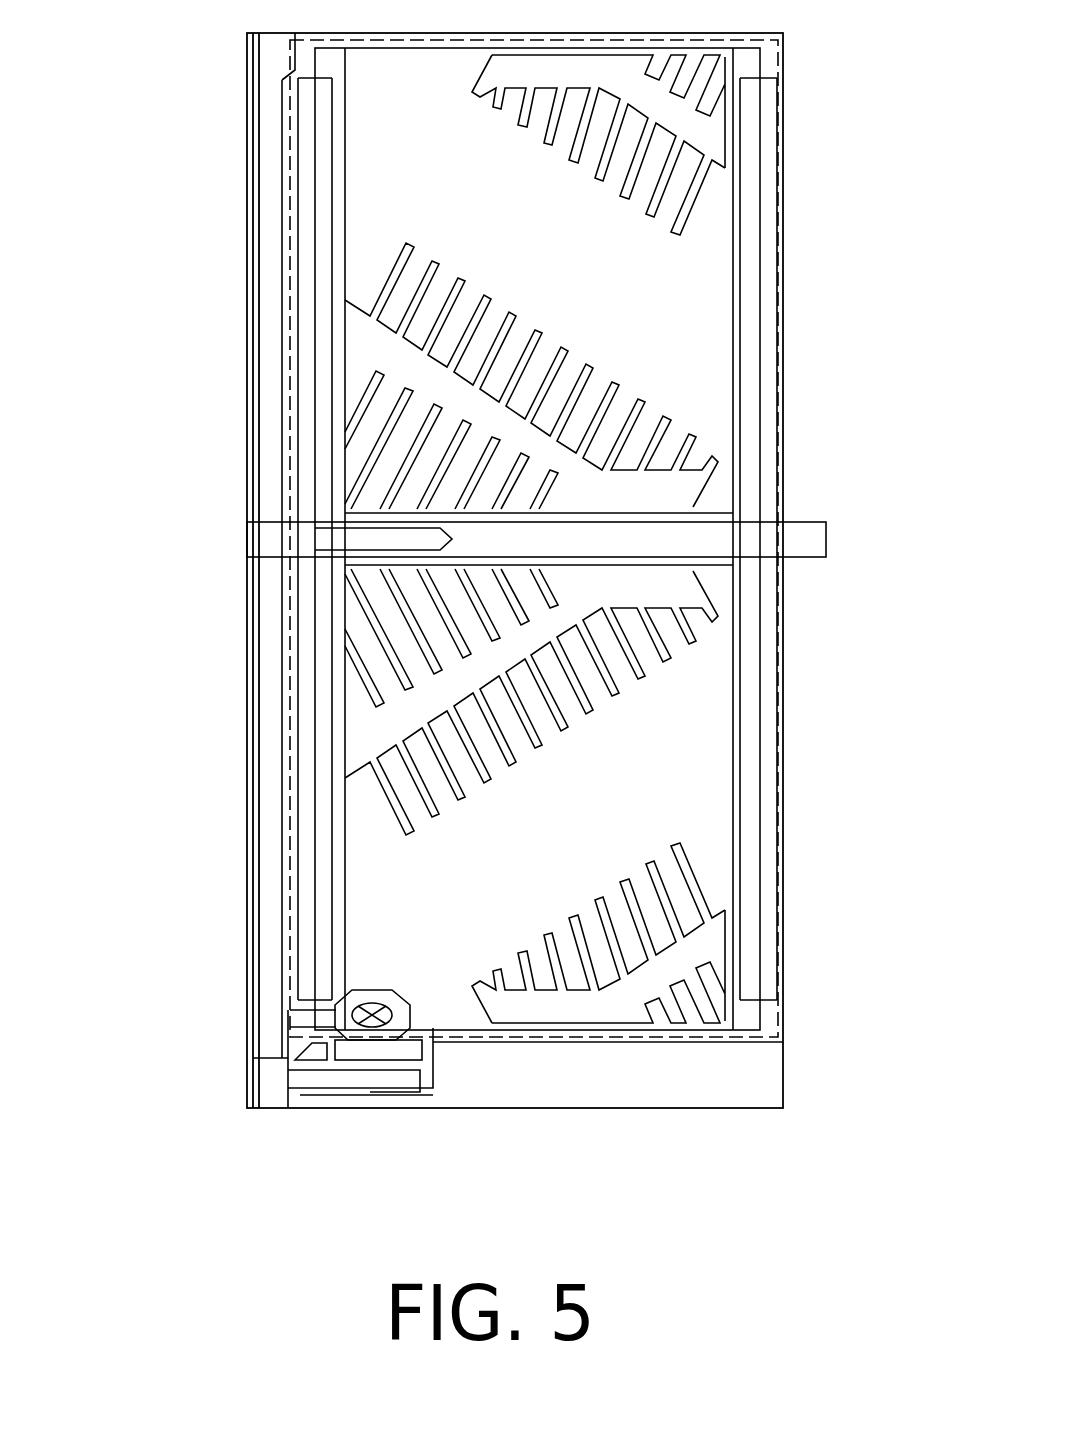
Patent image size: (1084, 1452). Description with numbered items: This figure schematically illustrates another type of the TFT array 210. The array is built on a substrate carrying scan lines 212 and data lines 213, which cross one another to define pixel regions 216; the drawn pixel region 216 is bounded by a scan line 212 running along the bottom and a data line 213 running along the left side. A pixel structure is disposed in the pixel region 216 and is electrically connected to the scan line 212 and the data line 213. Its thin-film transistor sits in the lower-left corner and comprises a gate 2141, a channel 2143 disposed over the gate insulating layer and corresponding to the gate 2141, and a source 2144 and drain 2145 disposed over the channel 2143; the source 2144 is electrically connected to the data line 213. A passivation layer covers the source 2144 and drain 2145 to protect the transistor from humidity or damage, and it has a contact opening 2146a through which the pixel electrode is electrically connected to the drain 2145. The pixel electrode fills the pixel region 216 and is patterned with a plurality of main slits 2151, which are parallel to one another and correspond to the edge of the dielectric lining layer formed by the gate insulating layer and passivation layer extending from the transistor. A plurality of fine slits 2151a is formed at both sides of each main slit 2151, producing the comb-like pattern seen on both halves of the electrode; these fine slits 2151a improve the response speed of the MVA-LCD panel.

The TFT array 210 is at (918, 1258).
The scan line 212 is at (572, 1095).
The data line 213 is at (265, 828).
The pixel region 216 is at (780, 65).
The gate 2141 is at (322, 1093).
The channel 2143 is at (405, 1065).
The source 2144 is at (335, 1082).
The drain 2145 is at (300, 1025).
The contact opening 2146a is at (340, 1003).
The main slit 2151 is at (400, 350).
The fine slit 2151a is at (386, 452).